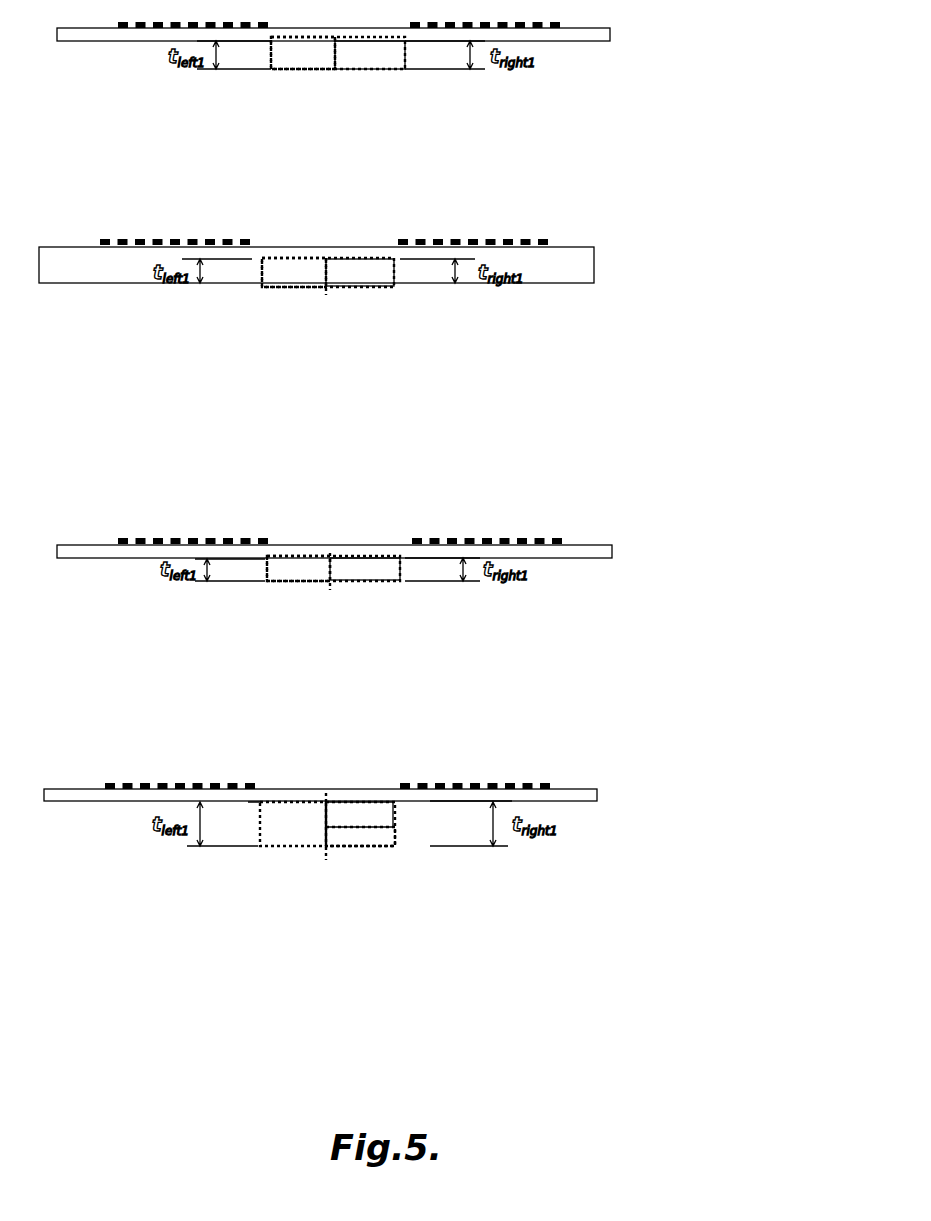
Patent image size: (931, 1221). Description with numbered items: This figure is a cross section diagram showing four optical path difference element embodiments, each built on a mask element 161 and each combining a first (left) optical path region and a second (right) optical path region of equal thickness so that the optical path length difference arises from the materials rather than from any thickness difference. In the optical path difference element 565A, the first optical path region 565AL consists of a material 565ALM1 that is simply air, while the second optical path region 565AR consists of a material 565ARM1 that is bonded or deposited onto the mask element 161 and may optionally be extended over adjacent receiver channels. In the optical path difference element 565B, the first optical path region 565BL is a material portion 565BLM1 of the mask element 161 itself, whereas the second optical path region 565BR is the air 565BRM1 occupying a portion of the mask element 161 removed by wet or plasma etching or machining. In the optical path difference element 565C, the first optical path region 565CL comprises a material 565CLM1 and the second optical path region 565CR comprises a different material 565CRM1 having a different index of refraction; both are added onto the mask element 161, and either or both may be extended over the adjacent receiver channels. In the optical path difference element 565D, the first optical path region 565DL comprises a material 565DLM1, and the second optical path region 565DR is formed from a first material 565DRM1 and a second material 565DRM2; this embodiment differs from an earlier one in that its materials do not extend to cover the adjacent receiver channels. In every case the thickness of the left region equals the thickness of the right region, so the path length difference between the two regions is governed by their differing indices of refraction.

The mask element 161 is at (611, 29).
The optical path difference element 565A is at (546, 119).
The second optical path region 565AR is at (530, 107).
The material 565ARM1 is at (383, 64).
The first optical path region 565AL is at (498, 119).
The material 565ALM1 is at (315, 64).
The optical path difference element 565B is at (509, 335).
The second optical path region 565BR is at (495, 322).
The air 565BRM1 is at (365, 284).
The first optical path region 565BL is at (461, 335).
The material portion 565BLM1 is at (296, 284).
The optical path difference element 565C is at (511, 636).
The second optical path region 565CR is at (496, 625).
The material 565CRM1 is at (363, 582).
The first optical path region 565CL is at (464, 638).
The material 565CLM1 is at (293, 582).
The optical path difference element 565D is at (538, 878).
The second optical path region 565DR is at (526, 869).
The material 565DRM1 is at (385, 834).
The material 565DRM2 is at (373, 849).
The first optical path region 565DL is at (491, 881).
The material 565DLM1 is at (298, 846).